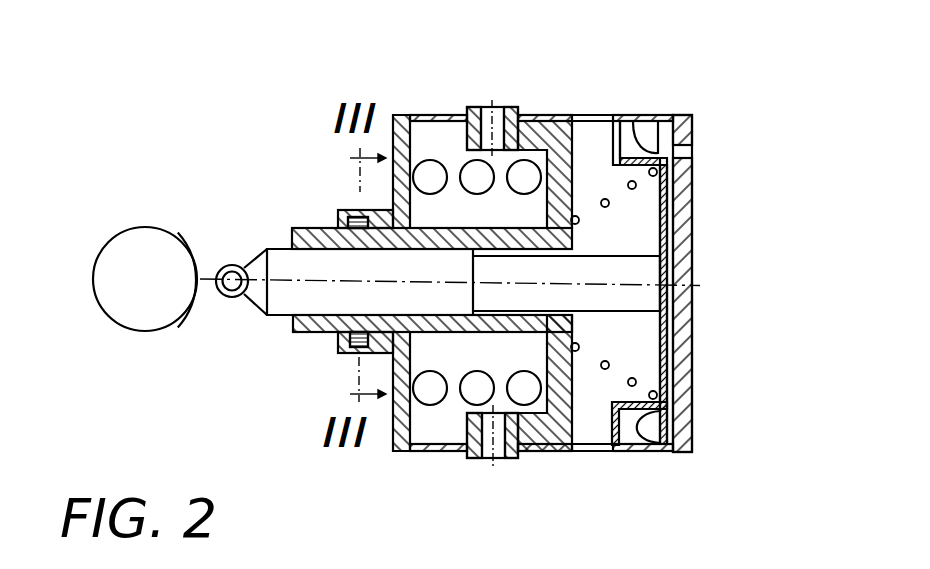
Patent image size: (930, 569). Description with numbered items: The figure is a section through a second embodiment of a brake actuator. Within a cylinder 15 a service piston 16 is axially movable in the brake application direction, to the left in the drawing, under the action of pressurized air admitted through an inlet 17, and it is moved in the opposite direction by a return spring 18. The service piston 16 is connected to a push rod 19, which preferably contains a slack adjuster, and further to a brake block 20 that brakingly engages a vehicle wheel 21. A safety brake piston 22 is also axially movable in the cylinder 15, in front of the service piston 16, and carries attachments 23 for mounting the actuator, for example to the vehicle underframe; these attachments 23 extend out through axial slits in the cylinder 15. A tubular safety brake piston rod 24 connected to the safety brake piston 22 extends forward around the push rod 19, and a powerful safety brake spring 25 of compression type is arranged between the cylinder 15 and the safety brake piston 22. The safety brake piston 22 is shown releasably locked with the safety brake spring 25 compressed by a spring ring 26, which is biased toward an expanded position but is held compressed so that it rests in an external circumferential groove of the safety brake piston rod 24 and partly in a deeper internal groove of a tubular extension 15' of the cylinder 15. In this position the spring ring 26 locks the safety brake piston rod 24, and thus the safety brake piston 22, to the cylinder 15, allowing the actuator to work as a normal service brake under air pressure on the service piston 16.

The cylinder 15 is at (551, 320).
The tubular extension 15' is at (343, 250).
The service piston 16 is at (667, 370).
The inlet 17 is at (683, 157).
The return spring 18 is at (600, 370).
The push rod 19 is at (273, 260).
The brake block 20 is at (187, 317).
The vehicle wheel 21 is at (132, 317).
The safety brake piston 22 is at (537, 447).
The attachments 23 is at (473, 108).
The safety brake piston rod 24 is at (295, 332).
The safety brake spring 25 is at (430, 397).
The spring ring 26 is at (357, 206).